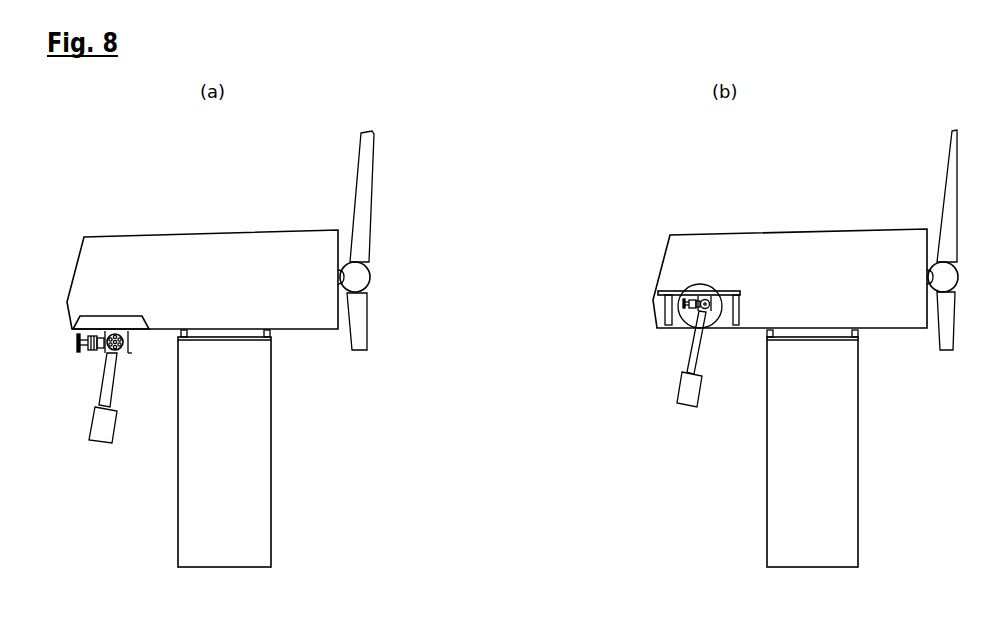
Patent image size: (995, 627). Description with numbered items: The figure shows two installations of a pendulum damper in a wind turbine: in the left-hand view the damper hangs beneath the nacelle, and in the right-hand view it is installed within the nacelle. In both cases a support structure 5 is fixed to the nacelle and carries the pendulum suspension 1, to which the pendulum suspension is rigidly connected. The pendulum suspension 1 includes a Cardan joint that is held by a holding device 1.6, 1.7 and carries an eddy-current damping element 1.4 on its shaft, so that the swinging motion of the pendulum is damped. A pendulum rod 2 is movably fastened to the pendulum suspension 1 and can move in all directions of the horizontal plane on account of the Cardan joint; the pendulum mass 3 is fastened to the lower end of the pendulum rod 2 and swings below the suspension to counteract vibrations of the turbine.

The pendulum suspension 1 is at (712, 297).
The eddy-current damping element 1.4 is at (108, 352).
The holding device 1.6 is at (129, 333).
The holding device 1.7 is at (119, 346).
The pendulum rod 2 is at (112, 405).
The pendulum mass 3 is at (107, 427).
The support structure 5 is at (144, 322).